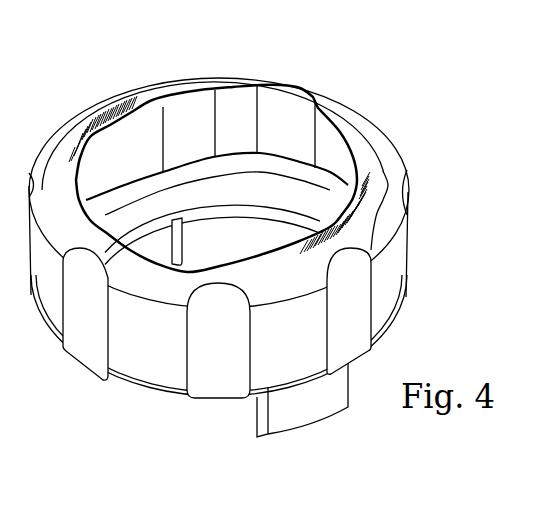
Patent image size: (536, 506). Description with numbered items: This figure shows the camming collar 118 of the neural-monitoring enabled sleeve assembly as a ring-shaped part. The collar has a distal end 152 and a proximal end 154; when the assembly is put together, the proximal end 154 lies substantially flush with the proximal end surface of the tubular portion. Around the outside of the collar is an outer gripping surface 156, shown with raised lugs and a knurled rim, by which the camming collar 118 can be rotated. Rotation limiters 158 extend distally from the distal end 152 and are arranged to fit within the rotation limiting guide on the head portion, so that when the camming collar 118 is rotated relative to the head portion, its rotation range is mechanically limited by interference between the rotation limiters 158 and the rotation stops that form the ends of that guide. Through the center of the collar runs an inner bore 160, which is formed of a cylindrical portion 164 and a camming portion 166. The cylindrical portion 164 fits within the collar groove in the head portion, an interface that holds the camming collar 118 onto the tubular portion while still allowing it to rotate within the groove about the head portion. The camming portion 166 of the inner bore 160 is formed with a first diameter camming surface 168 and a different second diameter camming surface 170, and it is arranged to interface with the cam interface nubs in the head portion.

The camming collar 118 is at (388, 92).
The distal end 152 is at (140, 388).
The proximal end 154 is at (125, 92).
The outer gripping surface 156 is at (90, 356).
The rotation limiters 158 is at (182, 218).
The inner bore 160 is at (265, 240).
The cylindrical portion 164 is at (220, 193).
The camming portion 166 is at (235, 108).
The first diameter camming surface 168 is at (276, 107).
The second diameter camming surface 170 is at (90, 180).